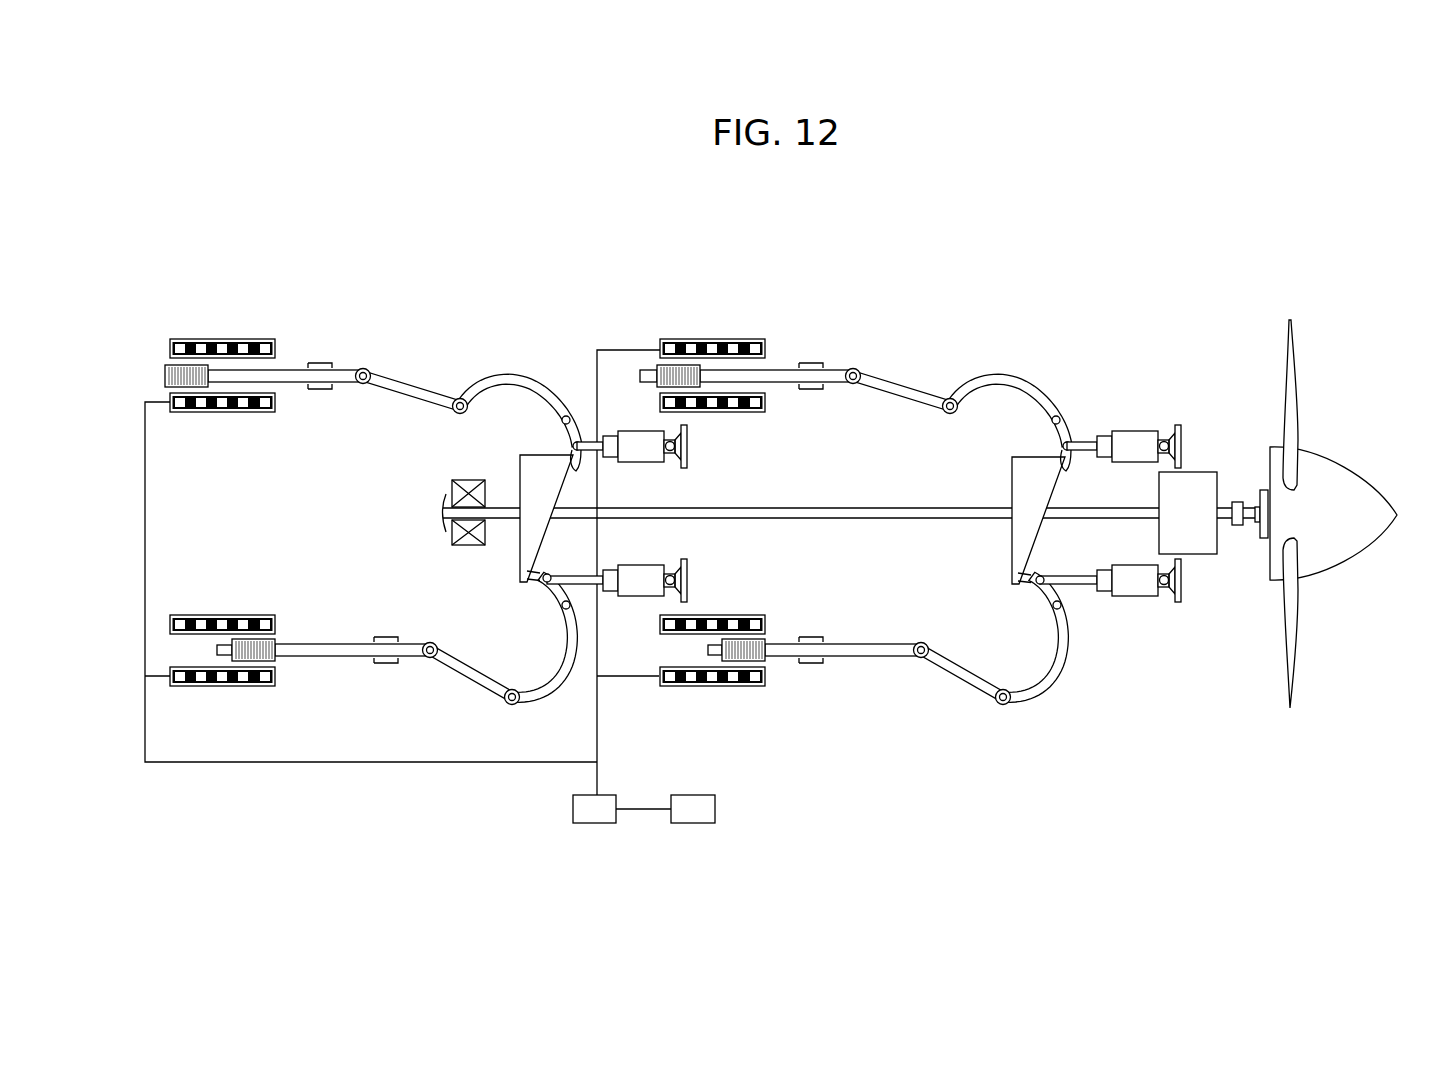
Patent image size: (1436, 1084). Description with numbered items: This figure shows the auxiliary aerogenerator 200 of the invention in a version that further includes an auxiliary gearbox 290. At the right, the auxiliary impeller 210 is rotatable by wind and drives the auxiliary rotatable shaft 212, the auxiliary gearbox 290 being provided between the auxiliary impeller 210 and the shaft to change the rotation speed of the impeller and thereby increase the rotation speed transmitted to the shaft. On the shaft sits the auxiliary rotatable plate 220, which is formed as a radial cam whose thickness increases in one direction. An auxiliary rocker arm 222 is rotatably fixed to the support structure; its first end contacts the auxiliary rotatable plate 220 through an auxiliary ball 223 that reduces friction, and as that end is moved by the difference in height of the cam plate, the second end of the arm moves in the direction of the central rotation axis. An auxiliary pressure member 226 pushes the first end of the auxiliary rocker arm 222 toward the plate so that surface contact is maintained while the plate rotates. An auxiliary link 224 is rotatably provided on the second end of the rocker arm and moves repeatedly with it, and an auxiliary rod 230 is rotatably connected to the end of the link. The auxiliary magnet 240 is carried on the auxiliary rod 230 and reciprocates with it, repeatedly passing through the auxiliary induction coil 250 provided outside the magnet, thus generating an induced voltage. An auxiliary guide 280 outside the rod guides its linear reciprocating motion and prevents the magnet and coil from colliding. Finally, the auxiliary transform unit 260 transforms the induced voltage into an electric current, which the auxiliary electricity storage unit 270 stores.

The auxiliary aerogenerator 200 is at (1108, 325).
The auxiliary impeller 210 is at (1333, 467).
The auxiliary rotatable shaft 212 is at (755, 522).
The auxiliary rotatable plate 220 is at (1020, 542).
The auxiliary rocker arm 222 is at (1015, 384).
The auxiliary ball 223 is at (1023, 580).
The auxiliary link 224 is at (912, 393).
The auxiliary pressure member 226 is at (1132, 436).
The auxiliary rod 230 is at (840, 372).
The auxiliary magnet 240 is at (655, 368).
The auxiliary induction coil 250 is at (723, 340).
The auxiliary transform unit 260 is at (594, 824).
The auxiliary electricity storage unit 270 is at (690, 824).
The auxiliary guide 280 is at (810, 391).
The auxiliary gearbox 290 is at (1200, 547).